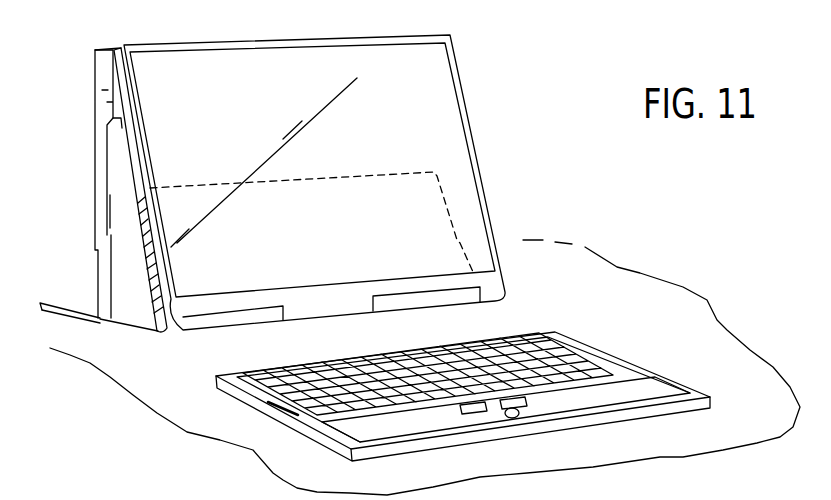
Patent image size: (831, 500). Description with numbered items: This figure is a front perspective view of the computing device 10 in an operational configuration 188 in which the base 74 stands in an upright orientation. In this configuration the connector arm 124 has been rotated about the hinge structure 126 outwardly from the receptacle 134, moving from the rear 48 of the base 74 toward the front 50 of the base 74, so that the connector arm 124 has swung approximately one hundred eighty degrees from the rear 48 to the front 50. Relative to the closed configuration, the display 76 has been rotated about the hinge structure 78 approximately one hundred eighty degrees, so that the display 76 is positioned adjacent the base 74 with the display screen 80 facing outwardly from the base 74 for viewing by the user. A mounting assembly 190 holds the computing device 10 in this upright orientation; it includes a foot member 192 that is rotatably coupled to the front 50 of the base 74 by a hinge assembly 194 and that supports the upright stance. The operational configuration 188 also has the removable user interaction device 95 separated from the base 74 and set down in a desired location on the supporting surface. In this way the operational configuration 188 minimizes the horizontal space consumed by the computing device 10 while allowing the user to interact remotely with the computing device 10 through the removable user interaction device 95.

The computing device 10 is at (570, 97).
The operational configuration 188 is at (362, 238).
The rear 48 is at (114, 48).
The base 74 is at (100, 74).
The receptacle 134 is at (127, 172).
The hinge structure 126 is at (112, 194).
The connector arm 124 is at (135, 220).
The mounting assembly 190 is at (42, 287).
The foot member 192 is at (65, 315).
The front 50 is at (107, 324).
The hinge structure 78 is at (150, 332).
The hinge assembly 194 is at (88, 365).
The display 76 is at (464, 97).
The display screen 80 is at (392, 147).
The removable user interaction device 95 is at (606, 355).